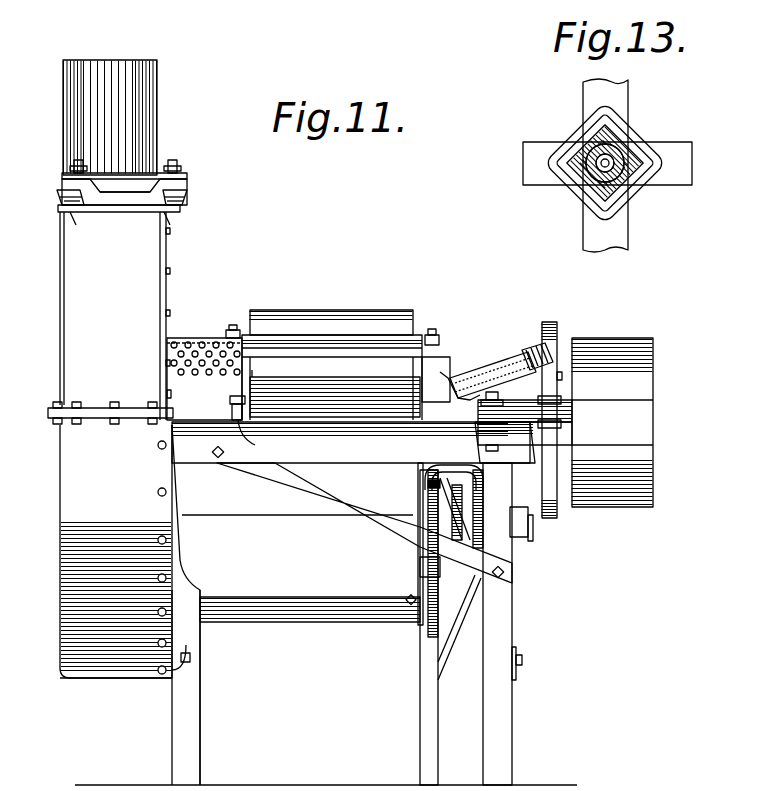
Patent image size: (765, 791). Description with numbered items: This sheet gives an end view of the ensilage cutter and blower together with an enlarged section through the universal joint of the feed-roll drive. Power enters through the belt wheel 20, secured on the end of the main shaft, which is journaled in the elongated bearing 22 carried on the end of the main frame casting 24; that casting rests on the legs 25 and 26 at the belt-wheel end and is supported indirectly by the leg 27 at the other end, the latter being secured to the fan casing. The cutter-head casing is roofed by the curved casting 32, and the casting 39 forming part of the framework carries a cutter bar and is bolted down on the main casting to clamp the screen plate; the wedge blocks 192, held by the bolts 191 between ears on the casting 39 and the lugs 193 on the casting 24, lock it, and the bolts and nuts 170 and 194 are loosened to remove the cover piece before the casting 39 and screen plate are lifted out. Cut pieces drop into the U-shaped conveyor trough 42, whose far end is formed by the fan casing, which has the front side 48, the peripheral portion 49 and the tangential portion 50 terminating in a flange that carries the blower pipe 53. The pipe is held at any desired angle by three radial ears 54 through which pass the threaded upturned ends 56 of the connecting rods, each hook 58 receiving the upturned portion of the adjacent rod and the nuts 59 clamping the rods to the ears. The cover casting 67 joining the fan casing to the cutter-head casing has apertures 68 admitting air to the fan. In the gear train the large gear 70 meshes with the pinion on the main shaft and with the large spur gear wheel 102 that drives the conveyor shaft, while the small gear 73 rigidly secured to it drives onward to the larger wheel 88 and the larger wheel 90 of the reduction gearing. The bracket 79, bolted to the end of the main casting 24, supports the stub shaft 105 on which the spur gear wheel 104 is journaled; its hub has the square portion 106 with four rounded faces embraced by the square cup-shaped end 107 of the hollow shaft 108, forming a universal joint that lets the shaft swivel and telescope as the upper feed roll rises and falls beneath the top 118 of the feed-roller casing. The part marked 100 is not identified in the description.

In FIG. 11, the belt wheel 20 is at (598, 352).
In FIG. 11, the elongated bearing 22 is at (523, 427).
In FIG. 11, the main frame casting 24 is at (351, 468).
In FIG. 11, the leg 25 is at (505, 628).
In FIG. 11, the leg 26 is at (430, 722).
In FIG. 11, the leg 27 is at (195, 742).
In FIG. 11, the curved casting 32 is at (343, 333).
In FIG. 11, the casting 39 is at (335, 397).
In FIG. 11, the conveyor trough 42 is at (342, 622).
In FIG. 11, the front side of fan casing 48 is at (62, 597).
In FIG. 11, the peripheral portion of fan casing 49 is at (118, 676).
In FIG. 11, the tangential portion 50 is at (80, 276).
In FIG. 11, the blower pipe 53 is at (152, 140).
In FIG. 11, the radial ears 54 is at (66, 176).
In FIG. 11, the threaded upturned end 56 is at (62, 196).
In FIG. 11, the hook 58 is at (75, 215).
In FIG. 11, the nuts 59 is at (72, 168).
In FIG. 11, the cover casting 67 is at (188, 387).
In FIG. 11, the apertures 68 is at (200, 336).
In FIG. 11, the large gear 70 is at (428, 498).
In FIG. 11, the small gear 73 is at (440, 482).
In FIG. 11, the bracket 79 is at (548, 325).
In FIG. 11, the larger spur gear wheel 88 is at (473, 559).
In FIG. 11, the larger spur gear wheel 90 is at (478, 545).
In FIG. 13, the bearing 100 is at (605, 163).
In FIG. 11, the large spur gear wheel 102 is at (428, 584).
In FIG. 13, the spur gear wheel 104 is at (712, 136).
In FIG. 13, the stub shaft 105 is at (622, 175).
In FIG. 13, the square hub portion 106 is at (622, 150).
In FIG. 11, the cup-shaped end 107 is at (526, 352).
In FIG. 13, the cup-shaped end 107 is at (575, 122).
In FIG. 11, the hollow shaft 108 is at (480, 380).
In FIG. 11, the top of feed-roller casing 118 is at (298, 318).
In FIG. 11, the bolts and nuts 170 is at (436, 340).
In FIG. 11, the bolts 191 is at (255, 375).
In FIG. 11, the wedge blocks 192 is at (228, 405).
In FIG. 11, the lugs 193 is at (258, 437).
In FIG. 11, the bolts and nuts 194 is at (236, 328).